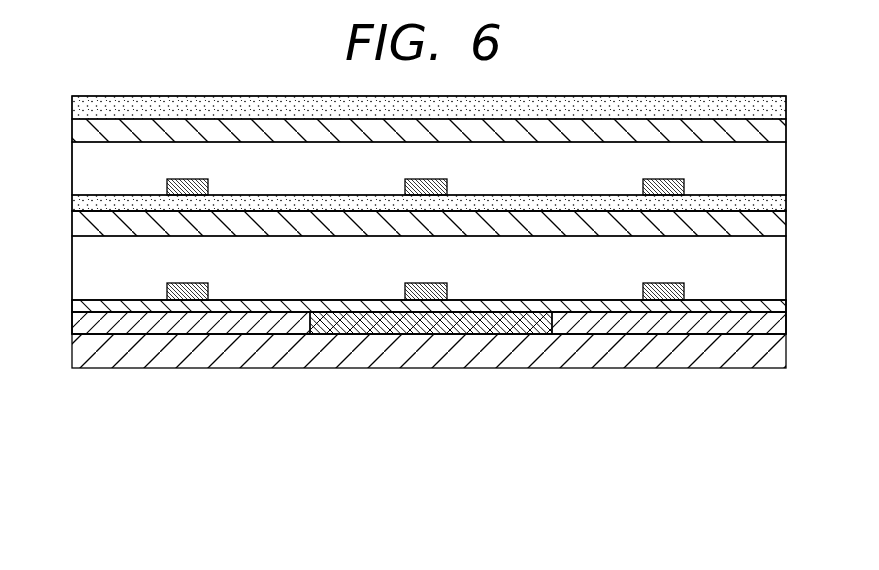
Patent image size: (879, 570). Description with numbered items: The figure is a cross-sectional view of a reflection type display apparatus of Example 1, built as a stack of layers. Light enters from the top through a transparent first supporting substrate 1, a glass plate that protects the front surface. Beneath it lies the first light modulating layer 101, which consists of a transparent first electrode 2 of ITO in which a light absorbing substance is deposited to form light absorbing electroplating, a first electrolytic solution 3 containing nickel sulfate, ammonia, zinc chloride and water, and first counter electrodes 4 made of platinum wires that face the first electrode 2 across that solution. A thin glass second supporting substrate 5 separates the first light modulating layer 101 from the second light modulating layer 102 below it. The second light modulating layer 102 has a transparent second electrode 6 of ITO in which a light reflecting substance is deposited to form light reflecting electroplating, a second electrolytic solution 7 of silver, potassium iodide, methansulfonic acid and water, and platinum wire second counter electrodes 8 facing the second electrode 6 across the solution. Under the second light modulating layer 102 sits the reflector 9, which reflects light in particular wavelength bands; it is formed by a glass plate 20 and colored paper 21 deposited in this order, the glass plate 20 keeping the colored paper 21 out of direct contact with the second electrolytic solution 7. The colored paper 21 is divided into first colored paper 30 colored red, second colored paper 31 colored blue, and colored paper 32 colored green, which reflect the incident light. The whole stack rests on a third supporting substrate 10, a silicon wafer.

The first supporting substrate 1 is at (72, 104).
The first electrode 2 is at (72, 130).
The first electrolytic solution 3 is at (72, 170).
The first counter electrodes 4 is at (208, 182).
The second supporting substrate 5 is at (72, 200).
The second electrode 6 is at (72, 222).
The second electrolytic solution 7 is at (72, 276).
The second counter electrodes 8 is at (208, 288).
The reflector 9 is at (438, 497).
The third supporting substrate 10 is at (72, 348).
The glass plate 20 is at (160, 312).
The colored paper 21 is at (553, 442).
The first colored paper 30 is at (268, 323).
The second colored paper 31 is at (417, 334).
The colored paper 32 is at (590, 334).
The first light modulating layer 101 is at (805, 112).
The second light modulating layer 102 is at (805, 215).